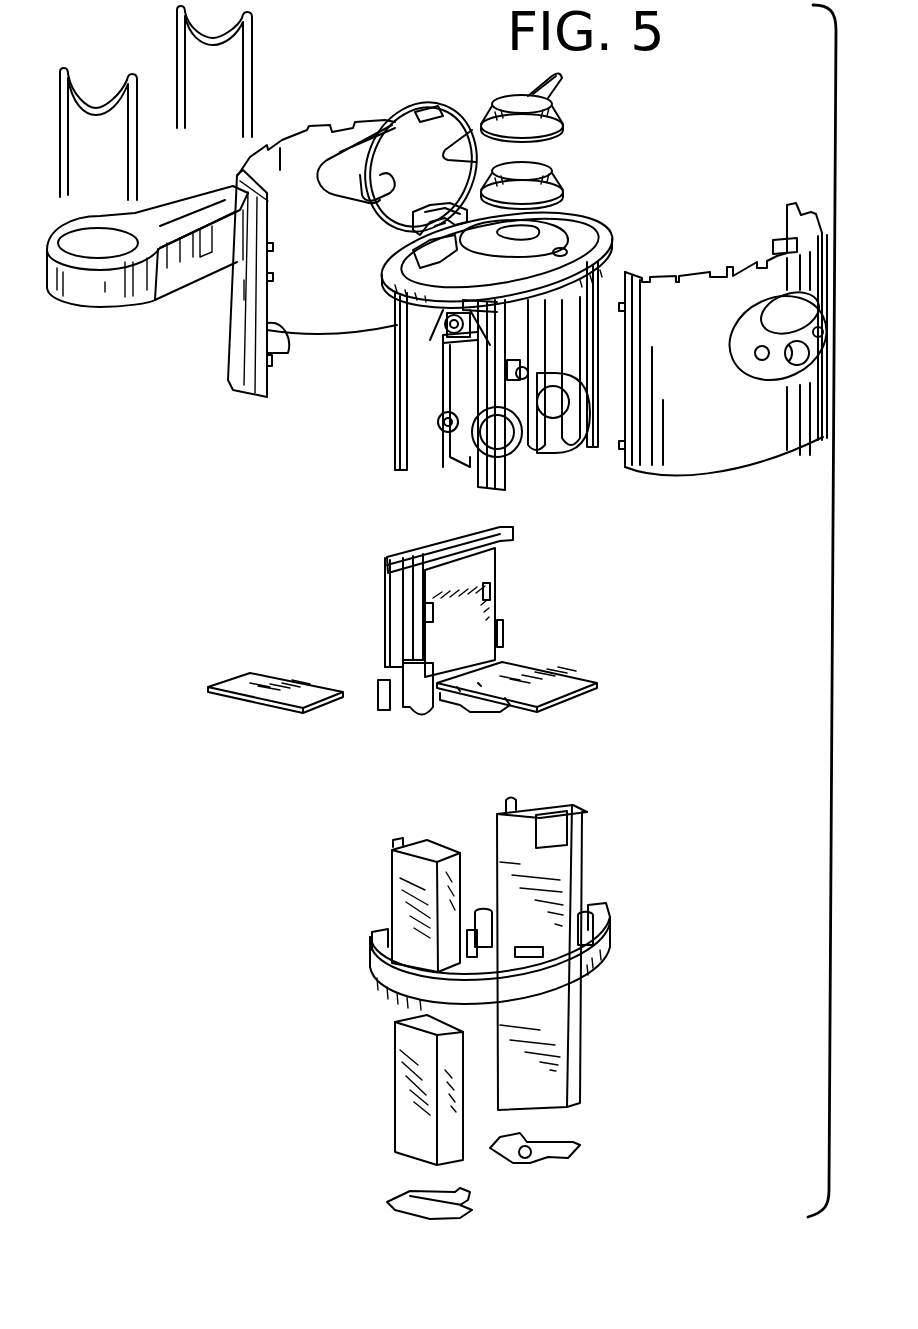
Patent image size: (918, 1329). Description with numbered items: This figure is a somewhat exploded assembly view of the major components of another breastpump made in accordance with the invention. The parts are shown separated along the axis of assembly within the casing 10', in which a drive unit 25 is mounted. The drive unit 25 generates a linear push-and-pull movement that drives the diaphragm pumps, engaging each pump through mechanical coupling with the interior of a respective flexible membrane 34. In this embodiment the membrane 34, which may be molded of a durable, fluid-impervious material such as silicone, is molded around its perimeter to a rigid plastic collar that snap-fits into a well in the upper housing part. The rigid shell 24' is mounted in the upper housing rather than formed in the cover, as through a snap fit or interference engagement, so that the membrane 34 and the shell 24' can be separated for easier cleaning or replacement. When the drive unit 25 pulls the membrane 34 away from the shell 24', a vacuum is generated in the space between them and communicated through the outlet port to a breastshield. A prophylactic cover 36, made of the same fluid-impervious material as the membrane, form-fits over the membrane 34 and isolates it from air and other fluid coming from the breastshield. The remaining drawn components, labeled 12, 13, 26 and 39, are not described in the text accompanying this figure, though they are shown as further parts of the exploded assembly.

The casing 10' is at (729, 388).
The housing body 12 is at (352, 150).
The base ring assembly 13 is at (618, 945).
The shell 24' is at (563, 107).
The drive unit 25 is at (548, 474).
The lever arm 26 is at (96, 294).
The membrane 34 is at (563, 226).
The prophylactic cover 36 is at (558, 164).
The battery 39 is at (402, 1072).